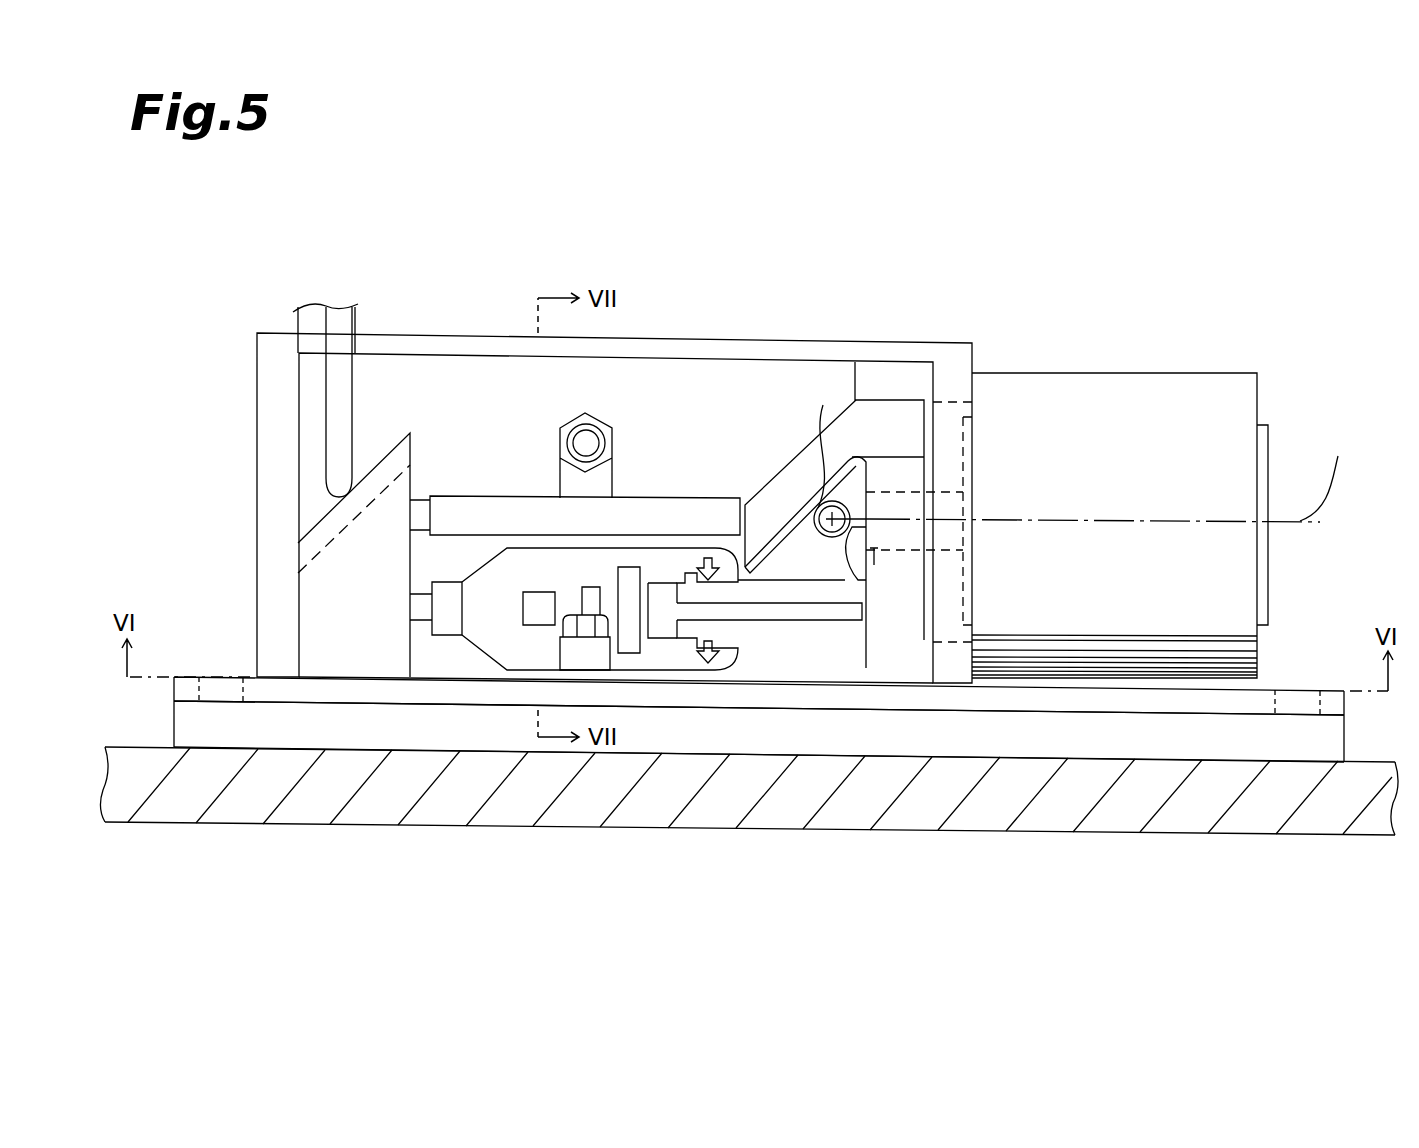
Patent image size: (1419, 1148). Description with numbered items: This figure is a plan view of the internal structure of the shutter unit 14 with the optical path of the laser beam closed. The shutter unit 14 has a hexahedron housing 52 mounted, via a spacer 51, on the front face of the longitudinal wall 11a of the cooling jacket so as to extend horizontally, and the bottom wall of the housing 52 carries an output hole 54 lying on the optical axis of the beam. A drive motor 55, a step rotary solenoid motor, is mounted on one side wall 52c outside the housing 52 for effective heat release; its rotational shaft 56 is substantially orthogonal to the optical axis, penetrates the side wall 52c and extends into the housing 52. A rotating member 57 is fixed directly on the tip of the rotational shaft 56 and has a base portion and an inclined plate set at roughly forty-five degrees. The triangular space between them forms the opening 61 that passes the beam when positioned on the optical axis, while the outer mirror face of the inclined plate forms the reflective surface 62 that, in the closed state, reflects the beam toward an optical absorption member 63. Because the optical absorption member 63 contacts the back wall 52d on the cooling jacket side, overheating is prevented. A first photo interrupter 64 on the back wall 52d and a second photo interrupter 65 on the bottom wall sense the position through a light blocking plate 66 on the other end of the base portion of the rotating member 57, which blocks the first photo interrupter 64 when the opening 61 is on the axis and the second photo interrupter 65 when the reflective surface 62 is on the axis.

The longitudinal wall 11a is at (822, 820).
The shutter unit 14 is at (1003, 284).
The spacer 51 is at (960, 728).
The housing 52 is at (388, 333).
The side wall 52c is at (953, 383).
The back wall 52d is at (372, 690).
The output hole 54 is at (822, 503).
The drive motor 55 is at (1218, 390).
The rotational shaft 56 is at (850, 608).
The rotating member 57 is at (893, 425).
The opening 61 is at (820, 569).
The reflective surface 62 is at (795, 477).
The optical absorption member 63 is at (318, 532).
The first photo interrupter 64 is at (660, 655).
The second photo interrupter 65 is at (648, 498).
The light blocking plate 66 is at (776, 622).